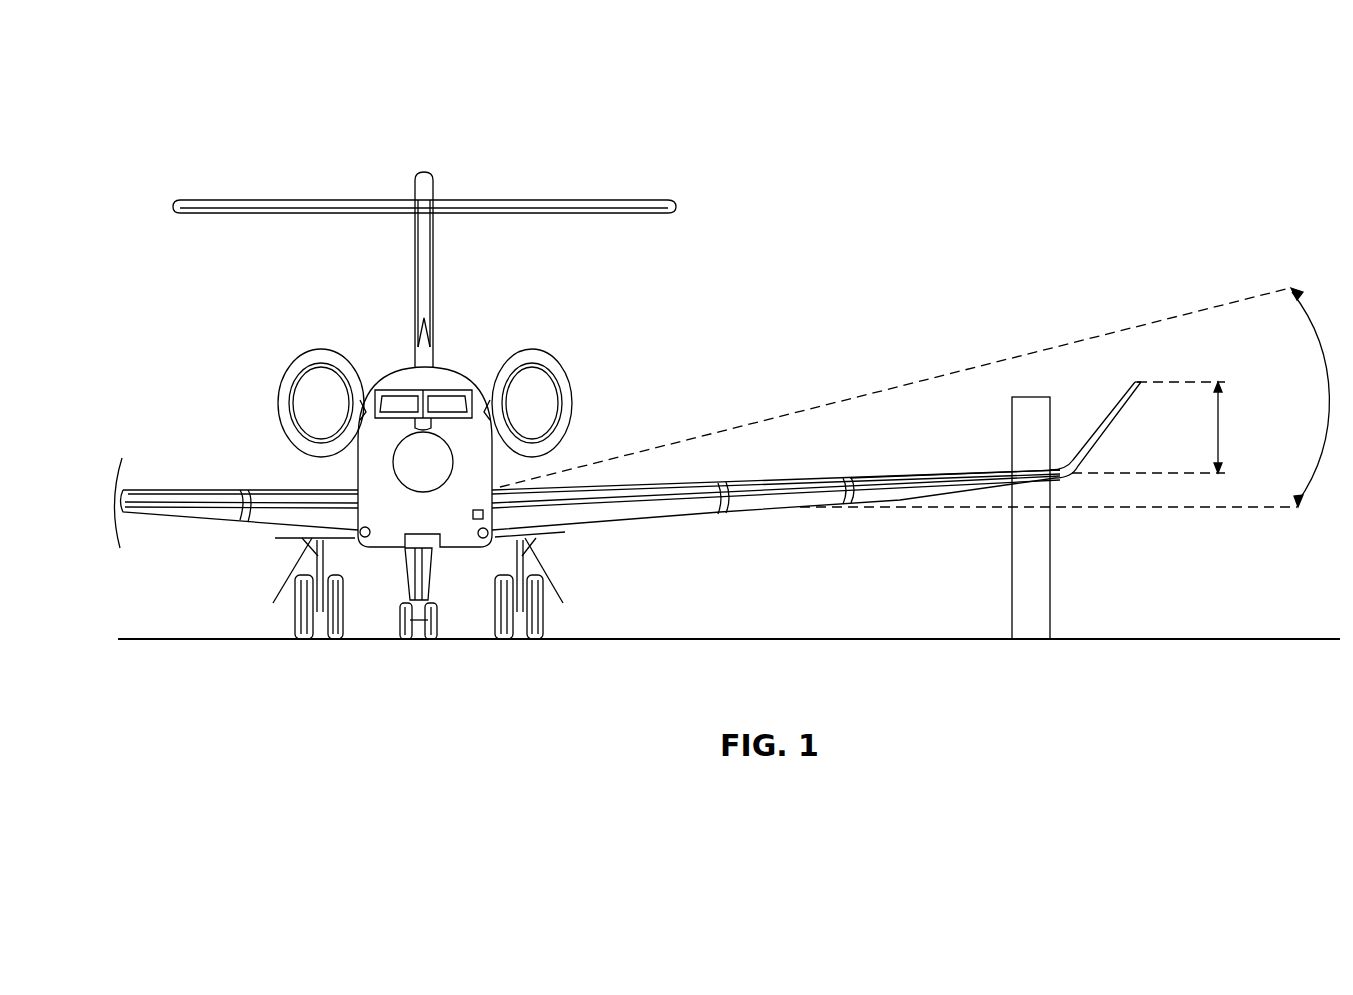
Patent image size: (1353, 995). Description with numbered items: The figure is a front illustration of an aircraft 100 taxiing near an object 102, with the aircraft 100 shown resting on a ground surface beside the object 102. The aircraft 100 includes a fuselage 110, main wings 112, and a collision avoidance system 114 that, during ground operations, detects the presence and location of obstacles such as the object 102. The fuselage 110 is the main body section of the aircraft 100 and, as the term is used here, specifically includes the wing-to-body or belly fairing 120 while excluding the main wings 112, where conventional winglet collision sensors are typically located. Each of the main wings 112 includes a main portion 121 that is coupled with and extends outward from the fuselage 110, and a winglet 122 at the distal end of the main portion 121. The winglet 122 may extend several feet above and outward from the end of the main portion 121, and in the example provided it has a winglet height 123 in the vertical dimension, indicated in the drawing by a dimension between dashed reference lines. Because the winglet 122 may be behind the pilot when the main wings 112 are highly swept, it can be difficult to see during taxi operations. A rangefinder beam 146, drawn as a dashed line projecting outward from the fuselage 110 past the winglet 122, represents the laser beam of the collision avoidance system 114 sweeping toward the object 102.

The aircraft 100 is at (766, 174).
The object 102 is at (1052, 570).
The fuselage 110 is at (452, 372).
The main wings 112 is at (205, 525).
The collision avoidance system 114 is at (480, 533).
The belly fairing 120 is at (387, 533).
The main portion 121 is at (835, 478).
The winglet 122 is at (1117, 410).
The winglet height 123 is at (1220, 430).
The rangefinder beam 146 is at (930, 400).